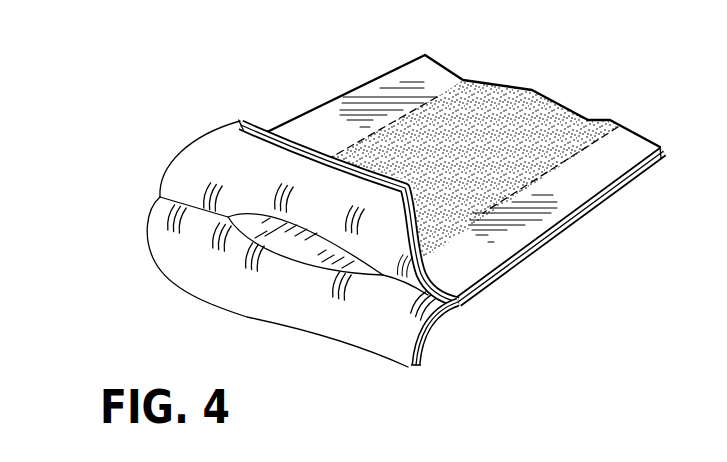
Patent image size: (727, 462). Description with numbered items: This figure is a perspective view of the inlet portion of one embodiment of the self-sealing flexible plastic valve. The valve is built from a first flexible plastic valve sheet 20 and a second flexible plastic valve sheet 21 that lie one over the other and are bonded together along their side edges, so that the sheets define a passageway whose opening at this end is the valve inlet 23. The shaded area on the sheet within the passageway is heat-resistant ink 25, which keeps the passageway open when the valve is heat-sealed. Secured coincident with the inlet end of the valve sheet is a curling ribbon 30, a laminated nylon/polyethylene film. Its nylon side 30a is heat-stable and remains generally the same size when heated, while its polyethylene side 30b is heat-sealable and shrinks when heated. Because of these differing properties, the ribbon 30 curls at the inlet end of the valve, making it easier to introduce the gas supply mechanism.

The first flexible plastic valve sheet 20 is at (365, 82).
The second flexible plastic valve sheet 21 is at (569, 226).
The valve inlet 23 is at (290, 270).
The heat-resistant ink 25 is at (528, 100).
The curling ribbon 30 is at (205, 132).
The heat-stable side of curling ribbon 30a is at (182, 183).
The heat-sealable side of curling ribbon 30b is at (430, 258).